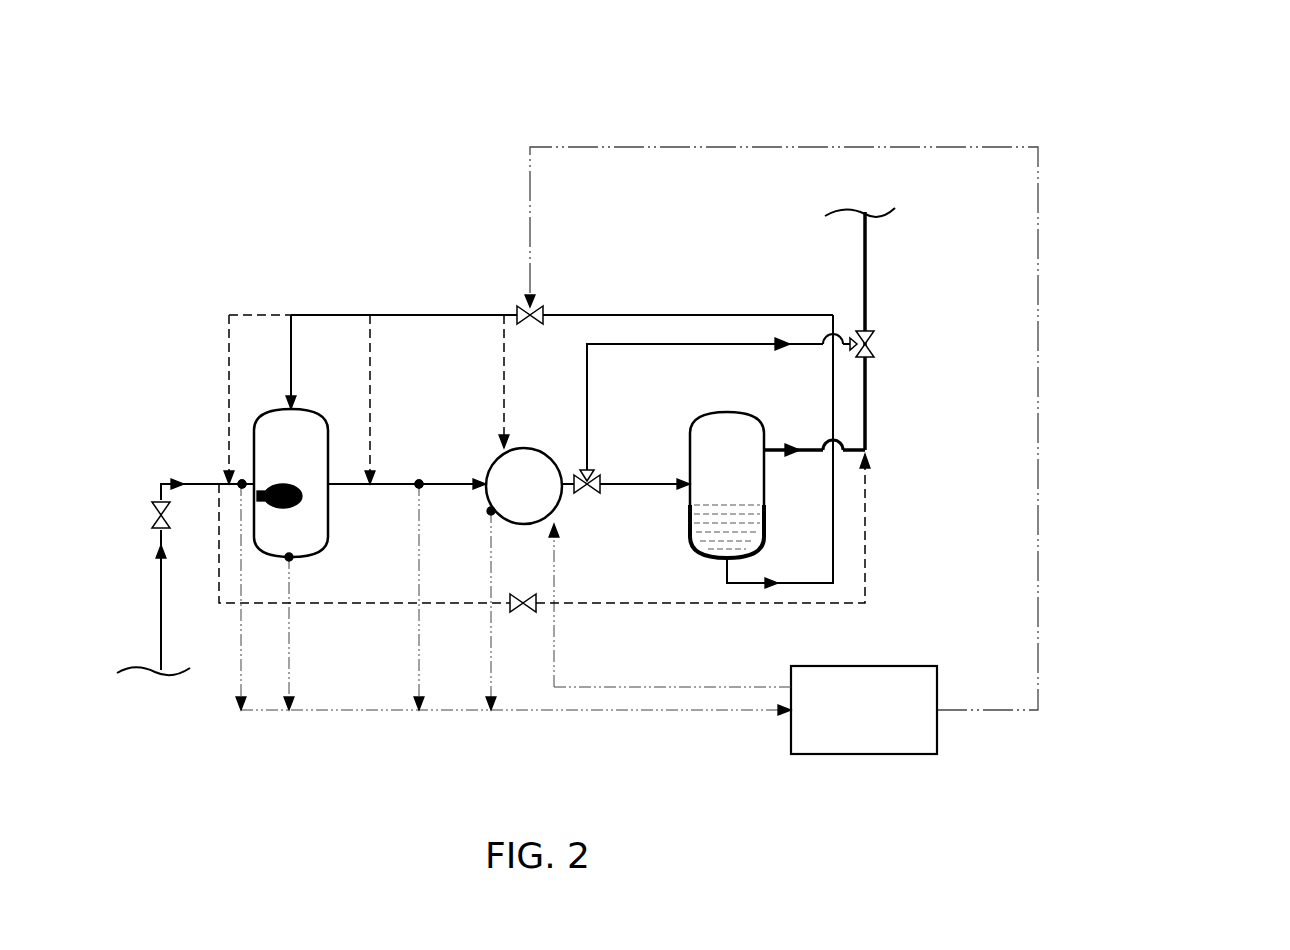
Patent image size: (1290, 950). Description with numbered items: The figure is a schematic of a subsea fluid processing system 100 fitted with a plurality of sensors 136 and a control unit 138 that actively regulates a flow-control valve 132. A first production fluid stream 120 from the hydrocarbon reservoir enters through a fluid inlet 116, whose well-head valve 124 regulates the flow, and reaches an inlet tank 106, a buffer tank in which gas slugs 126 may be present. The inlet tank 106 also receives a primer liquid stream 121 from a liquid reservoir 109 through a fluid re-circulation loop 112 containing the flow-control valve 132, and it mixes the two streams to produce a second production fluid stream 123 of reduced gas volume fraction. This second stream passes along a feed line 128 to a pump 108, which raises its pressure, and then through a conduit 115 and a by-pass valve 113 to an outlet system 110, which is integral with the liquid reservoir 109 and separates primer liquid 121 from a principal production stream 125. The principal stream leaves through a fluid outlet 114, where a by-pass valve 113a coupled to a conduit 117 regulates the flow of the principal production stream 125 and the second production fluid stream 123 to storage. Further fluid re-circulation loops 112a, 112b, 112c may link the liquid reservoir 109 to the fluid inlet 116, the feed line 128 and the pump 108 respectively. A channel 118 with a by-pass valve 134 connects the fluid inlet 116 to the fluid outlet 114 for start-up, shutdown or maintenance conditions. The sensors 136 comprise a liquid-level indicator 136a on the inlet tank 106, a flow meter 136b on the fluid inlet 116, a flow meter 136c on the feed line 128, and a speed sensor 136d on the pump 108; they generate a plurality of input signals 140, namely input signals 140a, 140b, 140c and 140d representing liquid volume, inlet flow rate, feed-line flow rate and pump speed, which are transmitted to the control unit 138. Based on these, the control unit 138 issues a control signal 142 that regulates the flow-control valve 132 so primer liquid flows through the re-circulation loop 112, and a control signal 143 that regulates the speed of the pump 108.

The subsea fluid processing system 100 is at (1172, 110).
The inlet tank 106 is at (330, 510).
The pump 108 is at (514, 526).
The liquid reservoir 109 is at (688, 525).
The outlet system 110 is at (708, 398).
The fluid re-circulation loop 112 is at (293, 327).
The fluid re-circulation loop 112a is at (229, 329).
The fluid re-circulation loop 112b is at (370, 330).
The fluid re-circulation loop 112c is at (504, 329).
The by-pass valve 113 is at (575, 468).
The by-pass valve 113a is at (875, 340).
The fluid outlet 114 is at (867, 385).
The conduit 115 is at (612, 481).
The fluid inlet 116 is at (160, 615).
The conduit 117 is at (585, 410).
The channel 118 is at (697, 608).
The first production fluid stream 120 is at (177, 480).
The primer liquid stream 121 is at (770, 580).
The second production fluid stream 123 is at (480, 495).
The well-head valve 124 is at (152, 510).
The principal production stream 125 is at (790, 445).
The gas slugs 126 is at (285, 486).
The feed line 128 is at (452, 482).
The flow-control valve 132 is at (538, 306).
The by-pass valve 134 is at (516, 620).
The plurality of sensors 136 is at (230, 495).
The liquid-level indicator 136a is at (292, 560).
The flow meter 136b is at (240, 477).
The flow meter 136c is at (416, 481).
The speed sensor 136d is at (489, 514).
The control unit 138 is at (937, 672).
The plurality of input signals 140 is at (419, 683).
The input signal 140a is at (289, 660).
The input signal 140b is at (238, 665).
The input signal 140c is at (419, 660).
The input signal 140d is at (491, 668).
The control signal 142 is at (1020, 712).
The control signal 143 is at (585, 680).